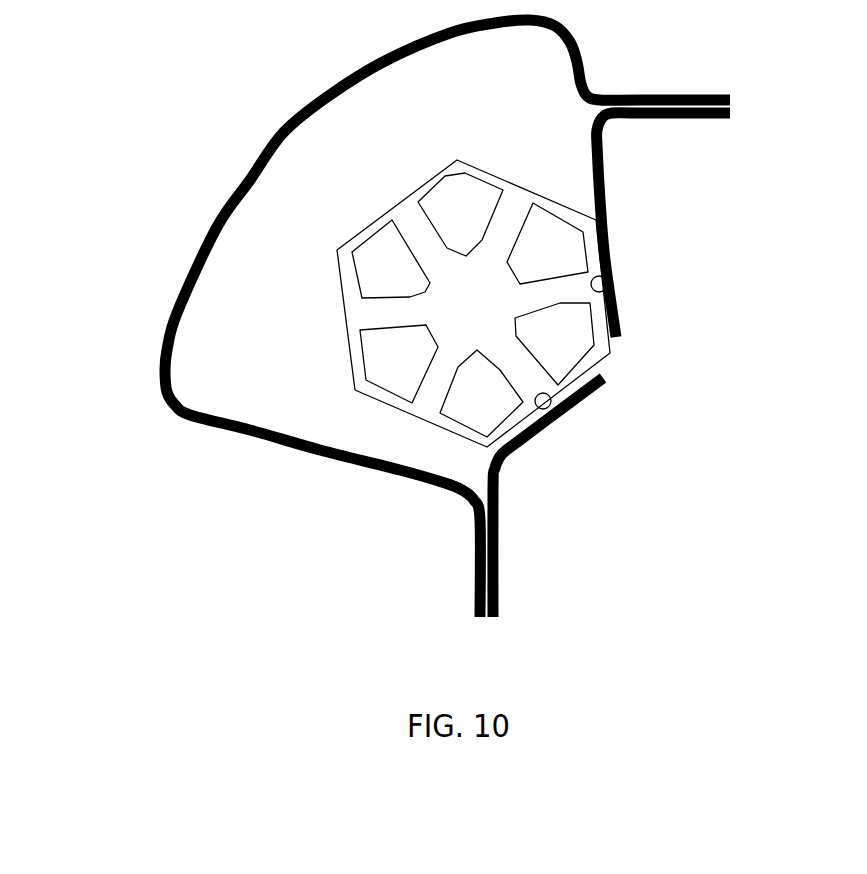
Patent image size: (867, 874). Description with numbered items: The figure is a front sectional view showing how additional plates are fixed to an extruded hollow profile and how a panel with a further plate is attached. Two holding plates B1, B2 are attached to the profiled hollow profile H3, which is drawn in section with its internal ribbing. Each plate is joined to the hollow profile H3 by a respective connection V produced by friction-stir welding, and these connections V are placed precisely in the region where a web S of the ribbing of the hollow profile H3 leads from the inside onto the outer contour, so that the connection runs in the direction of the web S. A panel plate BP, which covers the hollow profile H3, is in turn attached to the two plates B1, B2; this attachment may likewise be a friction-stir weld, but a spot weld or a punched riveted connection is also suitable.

The panel plate BP is at (166, 350).
The holding plate B1 is at (637, 117).
The holding plate B2 is at (497, 480).
The hollow profile H3 is at (347, 240).
The web S is at (527, 367).
The connection V is at (612, 300).